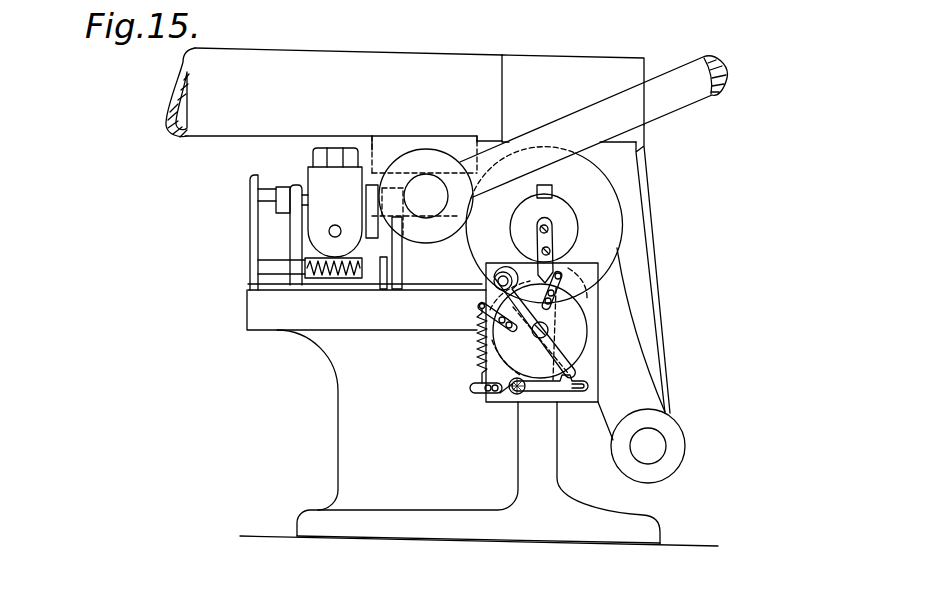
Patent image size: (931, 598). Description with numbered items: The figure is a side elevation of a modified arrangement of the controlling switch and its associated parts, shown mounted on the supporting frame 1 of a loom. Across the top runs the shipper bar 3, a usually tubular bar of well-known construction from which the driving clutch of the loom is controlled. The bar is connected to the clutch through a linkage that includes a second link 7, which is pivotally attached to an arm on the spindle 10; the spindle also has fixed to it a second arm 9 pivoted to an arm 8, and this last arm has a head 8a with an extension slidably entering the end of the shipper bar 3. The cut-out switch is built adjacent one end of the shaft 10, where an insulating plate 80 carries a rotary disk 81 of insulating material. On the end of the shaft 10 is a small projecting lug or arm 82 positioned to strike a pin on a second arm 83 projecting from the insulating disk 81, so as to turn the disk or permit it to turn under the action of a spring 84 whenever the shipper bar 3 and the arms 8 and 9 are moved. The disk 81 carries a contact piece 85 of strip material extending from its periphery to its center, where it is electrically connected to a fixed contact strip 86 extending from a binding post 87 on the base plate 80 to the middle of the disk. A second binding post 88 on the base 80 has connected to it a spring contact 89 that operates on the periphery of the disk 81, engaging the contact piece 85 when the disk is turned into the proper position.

The supporting frame 1 is at (345, 392).
The shipper bar 3 is at (273, 60).
The second link 7 is at (593, 126).
The arm 8 is at (647, 294).
The head 8a is at (573, 98).
The second arm 9 is at (645, 388).
The spindle 10 is at (563, 219).
The insulating plate 80 is at (594, 310).
The rotary disk 81 is at (578, 340).
The projecting lug or arm 82 is at (548, 240).
The second arm 83 is at (560, 274).
The spring 84 is at (478, 357).
The contact piece 85 is at (573, 362).
The fixed contact strip 86 is at (492, 311).
The binding post 87 is at (502, 272).
The second binding post 88 is at (515, 393).
The spring contact 89 is at (575, 393).